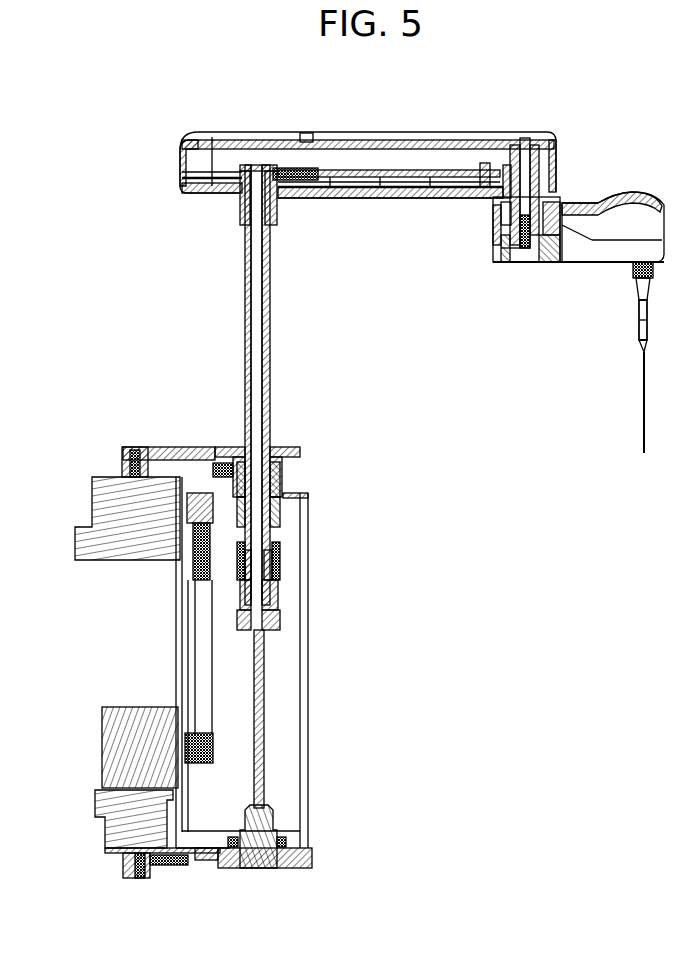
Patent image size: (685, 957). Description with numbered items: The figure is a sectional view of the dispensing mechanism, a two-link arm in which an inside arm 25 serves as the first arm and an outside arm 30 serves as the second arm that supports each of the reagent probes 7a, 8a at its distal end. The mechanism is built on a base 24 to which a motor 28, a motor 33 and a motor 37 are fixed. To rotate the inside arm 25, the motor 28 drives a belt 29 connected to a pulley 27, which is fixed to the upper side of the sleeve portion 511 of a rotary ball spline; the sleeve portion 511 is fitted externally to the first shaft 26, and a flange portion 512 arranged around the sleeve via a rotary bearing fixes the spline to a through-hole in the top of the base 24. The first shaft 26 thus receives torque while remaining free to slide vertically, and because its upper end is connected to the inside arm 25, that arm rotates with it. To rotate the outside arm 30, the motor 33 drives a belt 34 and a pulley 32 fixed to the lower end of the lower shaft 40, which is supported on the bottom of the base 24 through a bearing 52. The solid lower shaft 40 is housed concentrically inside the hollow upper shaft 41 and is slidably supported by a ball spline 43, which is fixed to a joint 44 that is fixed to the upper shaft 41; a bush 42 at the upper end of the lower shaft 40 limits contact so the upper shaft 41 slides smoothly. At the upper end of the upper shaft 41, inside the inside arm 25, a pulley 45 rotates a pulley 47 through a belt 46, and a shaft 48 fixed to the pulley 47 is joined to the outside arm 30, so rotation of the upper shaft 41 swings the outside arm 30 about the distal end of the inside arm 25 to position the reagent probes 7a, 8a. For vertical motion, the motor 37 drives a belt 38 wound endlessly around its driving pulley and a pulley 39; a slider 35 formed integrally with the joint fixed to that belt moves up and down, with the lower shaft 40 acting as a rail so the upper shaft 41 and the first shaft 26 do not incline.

The inside arm 25 is at (395, 199).
The belt 46 is at (370, 170).
The pulley 45 is at (258, 167).
The shaft 48 is at (527, 138).
The pulley 47 is at (506, 165).
The outside arm 30 is at (570, 262).
The reagent probe 7a is at (642, 407).
The reagent probe 8a is at (643, 376).
The first shaft 26 is at (270, 392).
The upper shaft 41 is at (257, 375).
The base 24 is at (307, 500).
The belt 29 is at (205, 450).
The motor 28 is at (95, 545).
The pulley 39 is at (200, 505).
The pulley 27 is at (290, 450).
The bush 42 is at (300, 462).
The flange portion 512 is at (300, 470).
The sleeve portion 511 is at (282, 512).
The slider 35 is at (280, 562).
The joint 44 is at (290, 592).
The ball spline 43 is at (285, 624).
The lower shaft 40 is at (262, 747).
The belt 38 is at (200, 667).
The motor 37 is at (103, 742).
The motor 33 is at (103, 807).
The belt 34 is at (185, 866).
The bearing 52 is at (285, 842).
The pulley 32 is at (272, 866).